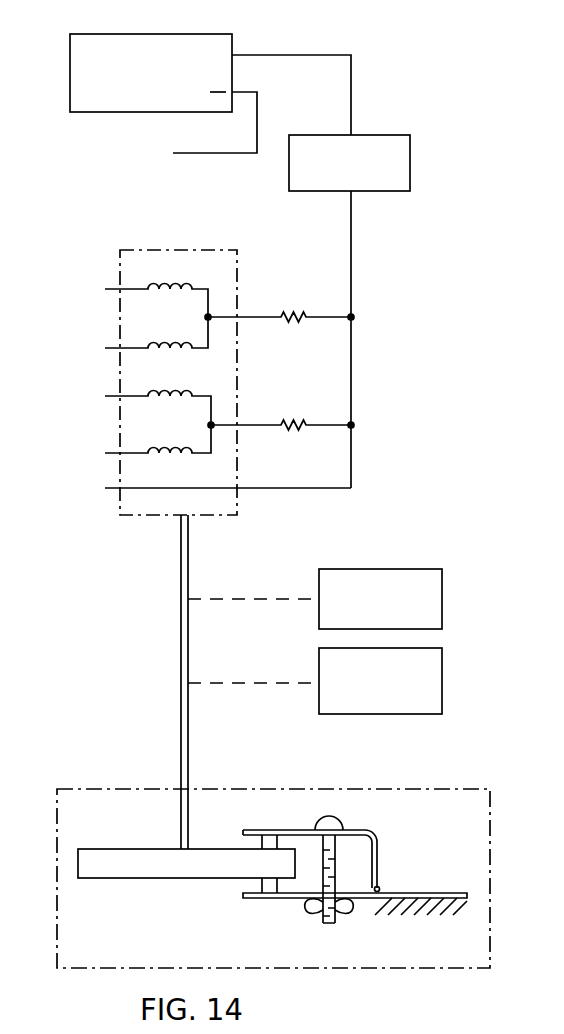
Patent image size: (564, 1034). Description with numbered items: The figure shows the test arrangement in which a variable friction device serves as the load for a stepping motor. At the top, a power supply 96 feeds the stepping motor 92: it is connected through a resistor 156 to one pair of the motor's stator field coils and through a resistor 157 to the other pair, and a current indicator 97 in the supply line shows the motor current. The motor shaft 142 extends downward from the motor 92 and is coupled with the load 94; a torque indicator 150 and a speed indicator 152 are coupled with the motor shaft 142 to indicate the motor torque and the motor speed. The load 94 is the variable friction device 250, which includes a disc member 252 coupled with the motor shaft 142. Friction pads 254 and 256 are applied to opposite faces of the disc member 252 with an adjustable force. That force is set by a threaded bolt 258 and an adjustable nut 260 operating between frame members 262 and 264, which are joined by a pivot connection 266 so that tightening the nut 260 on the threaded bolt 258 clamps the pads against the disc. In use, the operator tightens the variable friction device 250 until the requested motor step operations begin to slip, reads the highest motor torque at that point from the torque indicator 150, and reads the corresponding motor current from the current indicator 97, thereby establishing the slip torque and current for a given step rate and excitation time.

The power supply 96 is at (107, 33).
The current indicator 97 is at (319, 134).
The stepping motor 92 is at (152, 250).
The resistor 156 is at (299, 313).
The resistor 157 is at (305, 421).
The motor shaft 142 is at (180, 645).
The torque indicator 150 is at (395, 569).
The speed indicator 152 is at (398, 715).
The load 94 is at (103, 789).
The disc member 252 is at (133, 852).
The friction pad 254 is at (262, 843).
The friction pad 256 is at (263, 884).
The frame member 262 is at (296, 829).
The frame member 264 is at (261, 898).
The threaded screw 258 is at (335, 872).
The variable friction device 250 is at (424, 852).
The pivot connection 266 is at (382, 888).
The adjustable nut 260 is at (318, 910).